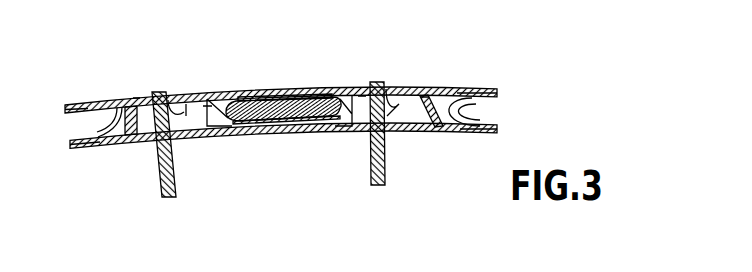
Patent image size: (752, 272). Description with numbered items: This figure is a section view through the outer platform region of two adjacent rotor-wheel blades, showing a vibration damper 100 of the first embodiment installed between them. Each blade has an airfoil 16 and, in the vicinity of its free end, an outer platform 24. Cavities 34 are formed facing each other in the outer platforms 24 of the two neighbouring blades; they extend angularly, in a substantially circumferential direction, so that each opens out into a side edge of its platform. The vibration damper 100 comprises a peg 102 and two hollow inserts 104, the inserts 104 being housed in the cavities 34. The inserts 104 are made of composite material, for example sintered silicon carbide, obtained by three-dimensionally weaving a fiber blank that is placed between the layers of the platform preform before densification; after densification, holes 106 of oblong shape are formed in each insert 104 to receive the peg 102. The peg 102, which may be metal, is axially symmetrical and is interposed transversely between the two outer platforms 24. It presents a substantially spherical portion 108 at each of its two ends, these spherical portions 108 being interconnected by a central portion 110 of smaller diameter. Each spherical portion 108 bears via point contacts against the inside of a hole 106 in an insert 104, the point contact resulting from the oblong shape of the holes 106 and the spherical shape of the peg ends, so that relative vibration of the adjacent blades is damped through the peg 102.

The airfoil 16 is at (160, 171).
The outer platform 24 is at (94, 102).
The cavities 34 is at (171, 108).
The vibration damper 100 is at (276, 110).
The peg 102 is at (262, 100).
The hollow inserts 104 is at (136, 98).
The holes 106 is at (80, 133).
The spherical portions 108 is at (323, 96).
The central portion 110 is at (288, 100).